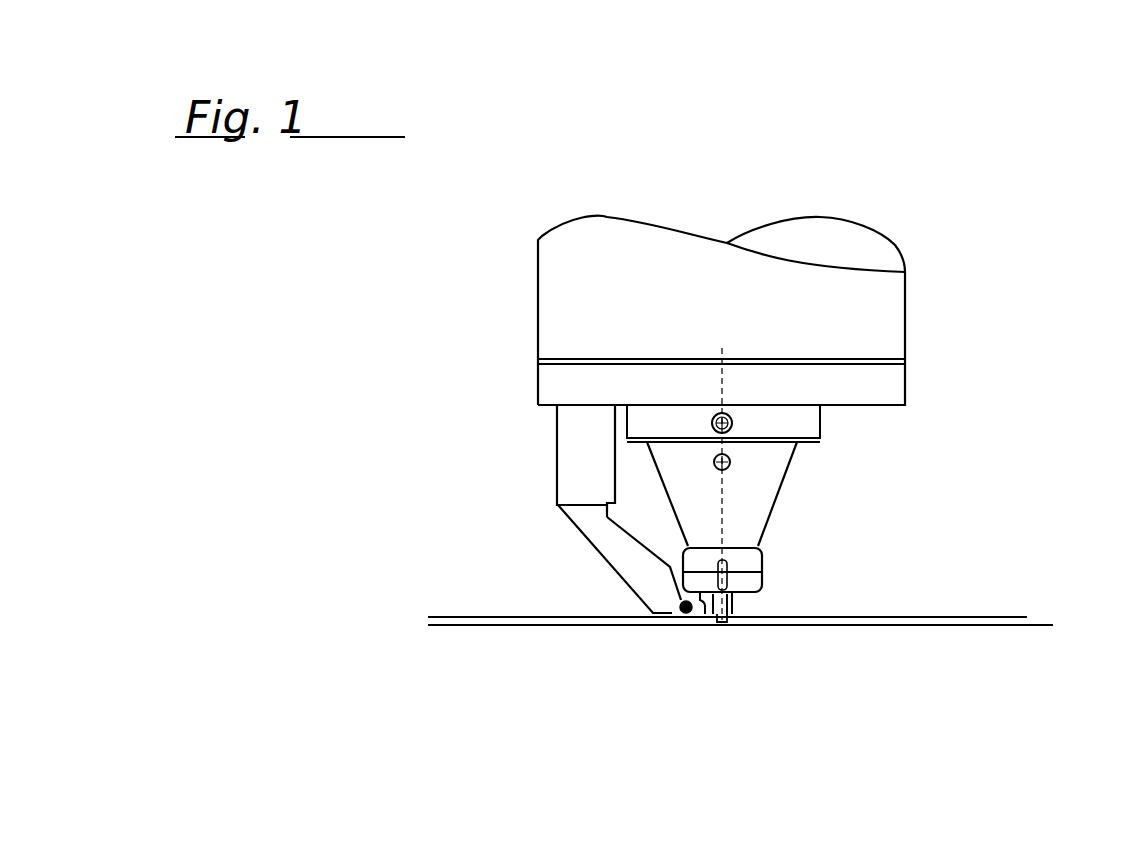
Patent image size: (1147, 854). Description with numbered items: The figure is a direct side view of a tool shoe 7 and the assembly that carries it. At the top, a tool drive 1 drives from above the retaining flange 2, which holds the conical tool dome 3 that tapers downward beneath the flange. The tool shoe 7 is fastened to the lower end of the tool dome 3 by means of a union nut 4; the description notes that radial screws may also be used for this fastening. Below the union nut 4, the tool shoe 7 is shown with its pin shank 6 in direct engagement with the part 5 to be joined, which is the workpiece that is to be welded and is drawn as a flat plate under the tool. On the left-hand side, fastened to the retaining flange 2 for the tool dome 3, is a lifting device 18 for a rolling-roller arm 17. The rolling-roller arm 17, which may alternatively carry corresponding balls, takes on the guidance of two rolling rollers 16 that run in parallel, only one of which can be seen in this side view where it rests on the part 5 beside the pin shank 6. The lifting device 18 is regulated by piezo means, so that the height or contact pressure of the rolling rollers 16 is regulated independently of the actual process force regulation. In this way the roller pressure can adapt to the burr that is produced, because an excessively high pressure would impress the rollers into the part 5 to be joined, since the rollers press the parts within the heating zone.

The housing 1 is at (858, 322).
The connecting band 2 is at (880, 380).
The conical holder 3 is at (772, 482).
The clamping head 4 is at (747, 577).
The workpiece plate 5 is at (903, 622).
The nozzle 6 is at (738, 607).
The tip 7 is at (713, 620).
The contact element 16 is at (686, 607).
The angled arm 17 is at (618, 557).
The bracket 18 is at (582, 462).